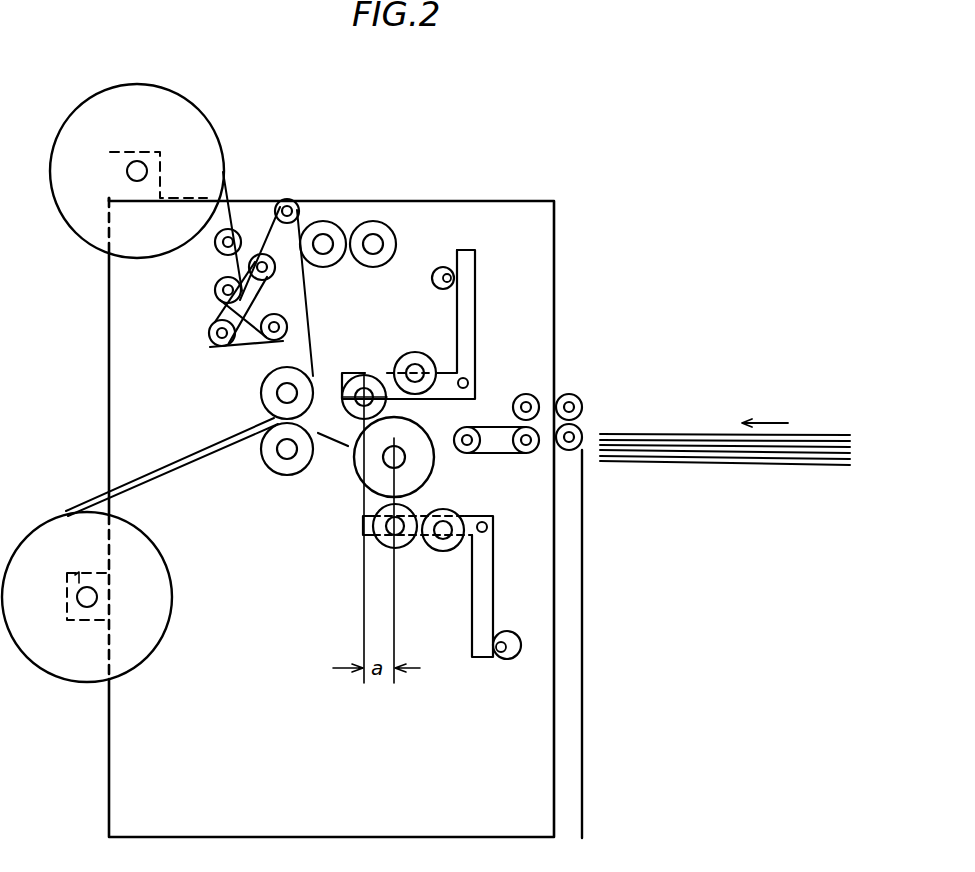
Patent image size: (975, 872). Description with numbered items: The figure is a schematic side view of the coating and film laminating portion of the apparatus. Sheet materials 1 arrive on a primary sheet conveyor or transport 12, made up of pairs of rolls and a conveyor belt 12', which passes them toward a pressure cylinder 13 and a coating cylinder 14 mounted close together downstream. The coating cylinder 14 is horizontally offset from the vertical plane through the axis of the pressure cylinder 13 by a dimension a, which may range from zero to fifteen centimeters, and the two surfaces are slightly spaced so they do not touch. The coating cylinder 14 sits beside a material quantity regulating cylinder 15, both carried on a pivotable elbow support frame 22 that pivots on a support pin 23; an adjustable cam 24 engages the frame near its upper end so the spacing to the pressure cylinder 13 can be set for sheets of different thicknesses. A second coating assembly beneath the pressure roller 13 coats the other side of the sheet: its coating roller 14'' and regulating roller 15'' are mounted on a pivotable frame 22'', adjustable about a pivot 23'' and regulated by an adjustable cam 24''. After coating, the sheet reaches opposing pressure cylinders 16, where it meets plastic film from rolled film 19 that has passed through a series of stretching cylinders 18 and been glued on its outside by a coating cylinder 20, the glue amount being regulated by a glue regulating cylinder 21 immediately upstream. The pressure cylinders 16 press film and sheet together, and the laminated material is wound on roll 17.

The sheet materials 1 is at (184, 466).
The primary sheet conveyor or transport 12 is at (570, 407).
The conveyor belt 12' is at (496, 459).
The pressure cylinder 13 is at (358, 475).
The coating cylinder 14 is at (363, 510).
The second coating roller 14'' is at (412, 550).
The material quantity regulating cylinder 15 is at (415, 355).
The regulating roller 15'' is at (448, 508).
The opposing pressure cylinders 16 is at (261, 404).
The roll 17 is at (50, 489).
The stretching cylinders 18 is at (290, 199).
The rolled film 19 is at (162, 90).
The coating cylinder 20 is at (332, 222).
The glue regulating cylinder 21 is at (380, 222).
The pivotable elbow support frame 22 is at (439, 419).
The pivotable frame 22'' is at (428, 586).
The support pin 23 is at (494, 367).
The pivot 23'' is at (505, 512).
The adjustable cam 24 is at (436, 259).
The adjustable cam 24'' is at (490, 669).